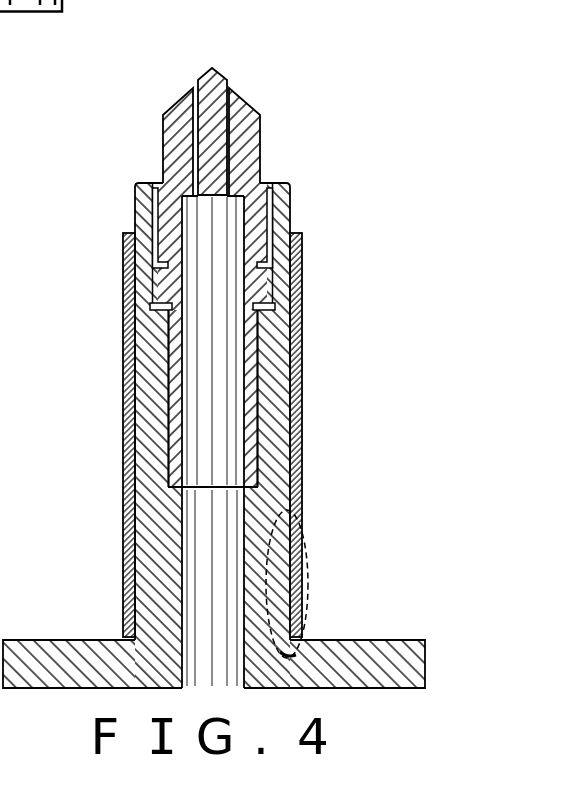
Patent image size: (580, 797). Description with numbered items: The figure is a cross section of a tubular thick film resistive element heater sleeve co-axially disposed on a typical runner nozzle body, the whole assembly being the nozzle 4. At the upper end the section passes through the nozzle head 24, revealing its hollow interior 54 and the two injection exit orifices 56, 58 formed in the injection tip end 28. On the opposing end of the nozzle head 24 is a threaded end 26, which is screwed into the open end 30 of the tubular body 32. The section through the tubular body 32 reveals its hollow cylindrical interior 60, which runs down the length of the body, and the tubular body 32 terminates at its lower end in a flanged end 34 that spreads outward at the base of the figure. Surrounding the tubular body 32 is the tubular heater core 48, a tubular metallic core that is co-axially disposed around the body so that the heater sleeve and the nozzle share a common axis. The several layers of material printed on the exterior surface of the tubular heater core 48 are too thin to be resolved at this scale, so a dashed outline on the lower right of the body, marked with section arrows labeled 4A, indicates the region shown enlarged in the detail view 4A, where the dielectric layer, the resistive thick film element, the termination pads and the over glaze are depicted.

The fitting body 4 is at (124, 538).
The nozzle head 24 is at (157, 250).
The threaded end 26 is at (167, 399).
The injection tip end 28 is at (203, 75).
The open end 30 is at (264, 201).
The tubular body 32 is at (272, 397).
The flanged end 34 is at (427, 663).
The tubular heater core 48 is at (126, 461).
The hollow interior 54 is at (207, 220).
The injection exit orifice 56 is at (197, 84).
The injection exit orifice 58 is at (229, 83).
The hollow cylindrical interior 60 is at (213, 510).
The detail region 4A is at (312, 518).